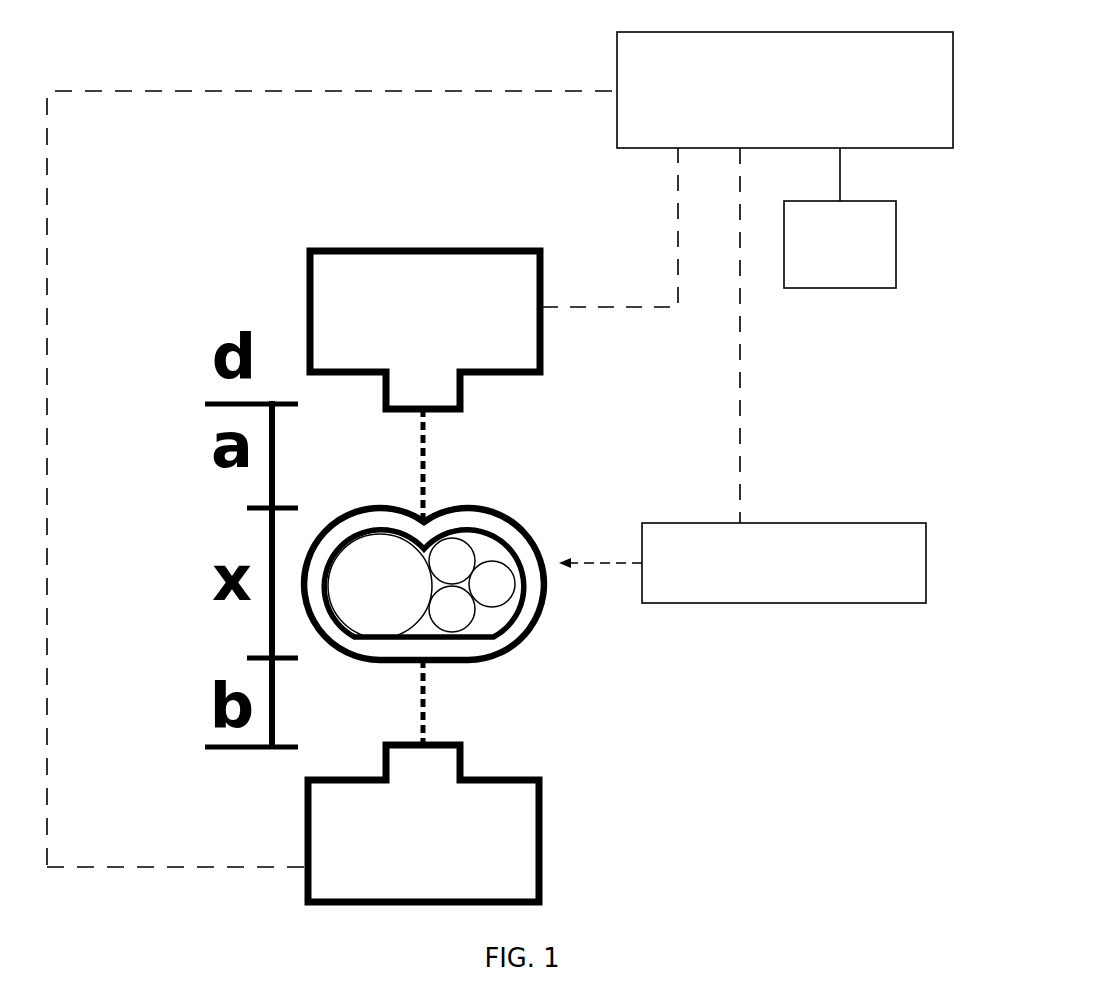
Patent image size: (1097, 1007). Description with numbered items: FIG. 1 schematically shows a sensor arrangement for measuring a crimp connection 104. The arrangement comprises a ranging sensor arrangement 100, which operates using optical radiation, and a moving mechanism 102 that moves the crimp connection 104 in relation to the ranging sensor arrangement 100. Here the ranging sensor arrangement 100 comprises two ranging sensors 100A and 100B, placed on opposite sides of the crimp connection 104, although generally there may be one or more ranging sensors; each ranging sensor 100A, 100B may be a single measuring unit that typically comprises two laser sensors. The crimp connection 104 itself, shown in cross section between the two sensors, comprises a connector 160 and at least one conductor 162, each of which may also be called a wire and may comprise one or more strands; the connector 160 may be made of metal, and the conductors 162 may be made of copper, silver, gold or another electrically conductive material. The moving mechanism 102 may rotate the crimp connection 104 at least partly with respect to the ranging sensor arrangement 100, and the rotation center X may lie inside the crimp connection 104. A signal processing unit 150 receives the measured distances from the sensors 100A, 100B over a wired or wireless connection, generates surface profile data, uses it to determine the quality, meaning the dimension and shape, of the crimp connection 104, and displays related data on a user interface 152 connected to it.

The ranging sensor arrangement 100 is at (305, 298).
The ranging sensor 100A is at (396, 320).
The ranging sensor 100B is at (396, 849).
The moving mechanism 102 is at (788, 523).
The crimp connection 104 is at (341, 666).
The signal processing unit 150 is at (730, 32).
The user interface 152 is at (857, 201).
The connector 160 is at (357, 509).
The conductor 162 is at (397, 596).